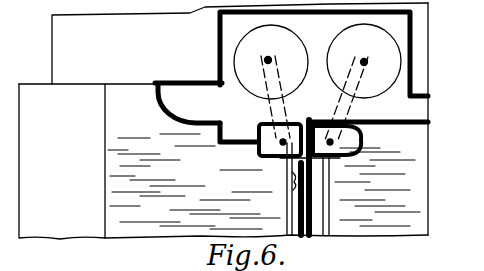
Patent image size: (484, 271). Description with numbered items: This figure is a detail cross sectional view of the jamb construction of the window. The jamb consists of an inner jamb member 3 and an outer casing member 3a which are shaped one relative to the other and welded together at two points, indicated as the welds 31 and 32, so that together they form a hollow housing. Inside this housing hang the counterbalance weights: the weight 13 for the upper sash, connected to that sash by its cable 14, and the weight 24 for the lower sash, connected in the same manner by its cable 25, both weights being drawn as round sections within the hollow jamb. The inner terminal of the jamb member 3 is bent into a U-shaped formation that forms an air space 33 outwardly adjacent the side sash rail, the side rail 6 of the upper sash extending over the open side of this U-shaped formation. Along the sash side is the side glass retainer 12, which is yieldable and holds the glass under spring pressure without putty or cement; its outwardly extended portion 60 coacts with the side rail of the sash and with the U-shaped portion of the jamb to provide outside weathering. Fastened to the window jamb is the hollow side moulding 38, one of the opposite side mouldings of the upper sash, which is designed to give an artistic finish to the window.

The inner jamb member 3 is at (405, 121).
The outer casing member 3a is at (190, 104).
The side rail of upper sash 6 is at (314, 190).
The side glass retainer 12 is at (286, 172).
The weight 13 is at (293, 45).
The cable 14 is at (284, 46).
The weight 24 is at (378, 97).
The cable 25 is at (384, 47).
The weld 31 is at (430, 90).
The weld 32 is at (262, 157).
The air space 33 is at (261, 124).
The side moulding 38 is at (348, 156).
The outwardly extended portion of side glass retainer 60 is at (297, 122).